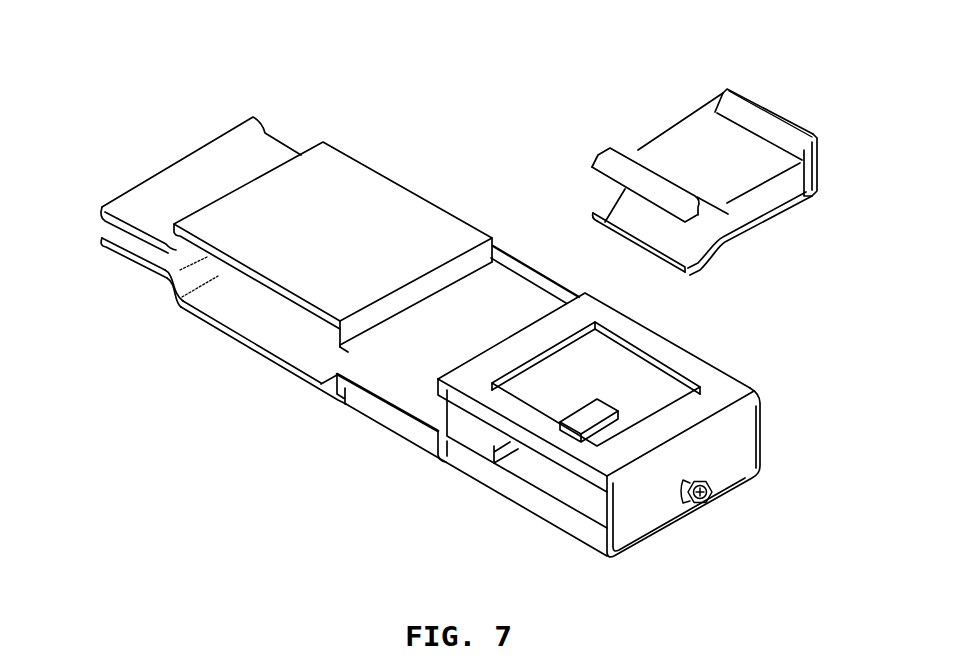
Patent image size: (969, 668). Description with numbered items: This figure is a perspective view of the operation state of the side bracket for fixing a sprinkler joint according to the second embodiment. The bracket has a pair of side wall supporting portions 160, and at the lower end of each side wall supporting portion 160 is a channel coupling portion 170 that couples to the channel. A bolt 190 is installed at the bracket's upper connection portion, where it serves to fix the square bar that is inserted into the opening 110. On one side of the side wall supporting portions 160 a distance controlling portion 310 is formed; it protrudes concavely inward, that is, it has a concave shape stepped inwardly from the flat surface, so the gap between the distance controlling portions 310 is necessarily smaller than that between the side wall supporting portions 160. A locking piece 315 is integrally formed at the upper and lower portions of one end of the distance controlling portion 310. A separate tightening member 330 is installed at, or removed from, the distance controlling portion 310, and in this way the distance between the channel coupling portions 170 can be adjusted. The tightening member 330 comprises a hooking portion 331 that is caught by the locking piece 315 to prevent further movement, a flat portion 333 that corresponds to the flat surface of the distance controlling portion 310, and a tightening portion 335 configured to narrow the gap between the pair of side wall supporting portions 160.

The opening 110 is at (640, 388).
The side wall supporting portion 160 is at (393, 205).
The channel coupling portion 170 is at (272, 150).
The bolt 190 is at (715, 500).
The distance controlling portion 310 is at (430, 397).
The locking piece 315 is at (509, 253).
The tightening member 330 is at (669, 163).
The hooking portion 331 is at (600, 150).
The flat portion 333 is at (752, 205).
The tightening portion 335 is at (812, 136).